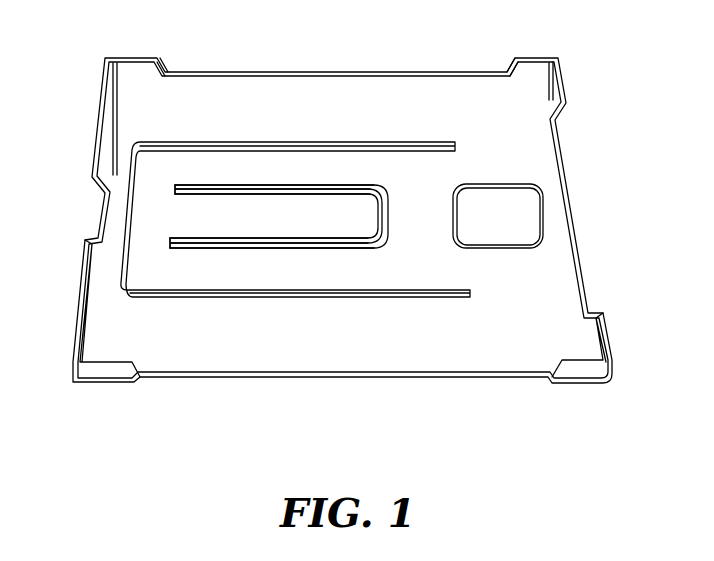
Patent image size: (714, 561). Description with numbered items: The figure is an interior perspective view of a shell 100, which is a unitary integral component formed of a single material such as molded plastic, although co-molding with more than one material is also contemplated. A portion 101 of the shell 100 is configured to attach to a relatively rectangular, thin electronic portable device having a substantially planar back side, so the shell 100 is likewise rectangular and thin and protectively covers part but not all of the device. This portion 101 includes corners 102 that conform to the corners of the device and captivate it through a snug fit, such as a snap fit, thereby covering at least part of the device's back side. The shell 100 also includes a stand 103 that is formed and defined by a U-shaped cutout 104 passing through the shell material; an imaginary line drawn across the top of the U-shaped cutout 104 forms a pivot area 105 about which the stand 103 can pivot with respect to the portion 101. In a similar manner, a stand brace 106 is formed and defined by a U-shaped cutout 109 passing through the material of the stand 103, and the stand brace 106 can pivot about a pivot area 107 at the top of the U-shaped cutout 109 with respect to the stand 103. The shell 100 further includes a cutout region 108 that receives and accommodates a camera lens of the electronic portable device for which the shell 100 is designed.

The shell 100 is at (342, 251).
The portion of the shell 101 is at (200, 340).
The corners 102 is at (110, 87).
The stand 103 is at (337, 168).
The U-shaped cutout 104 is at (422, 140).
The pivot area 105 is at (453, 168).
The stand brace 106 is at (300, 226).
The pivot area 107 is at (173, 220).
The cutout region 108 is at (497, 217).
The U-shaped cutout 109 is at (292, 250).